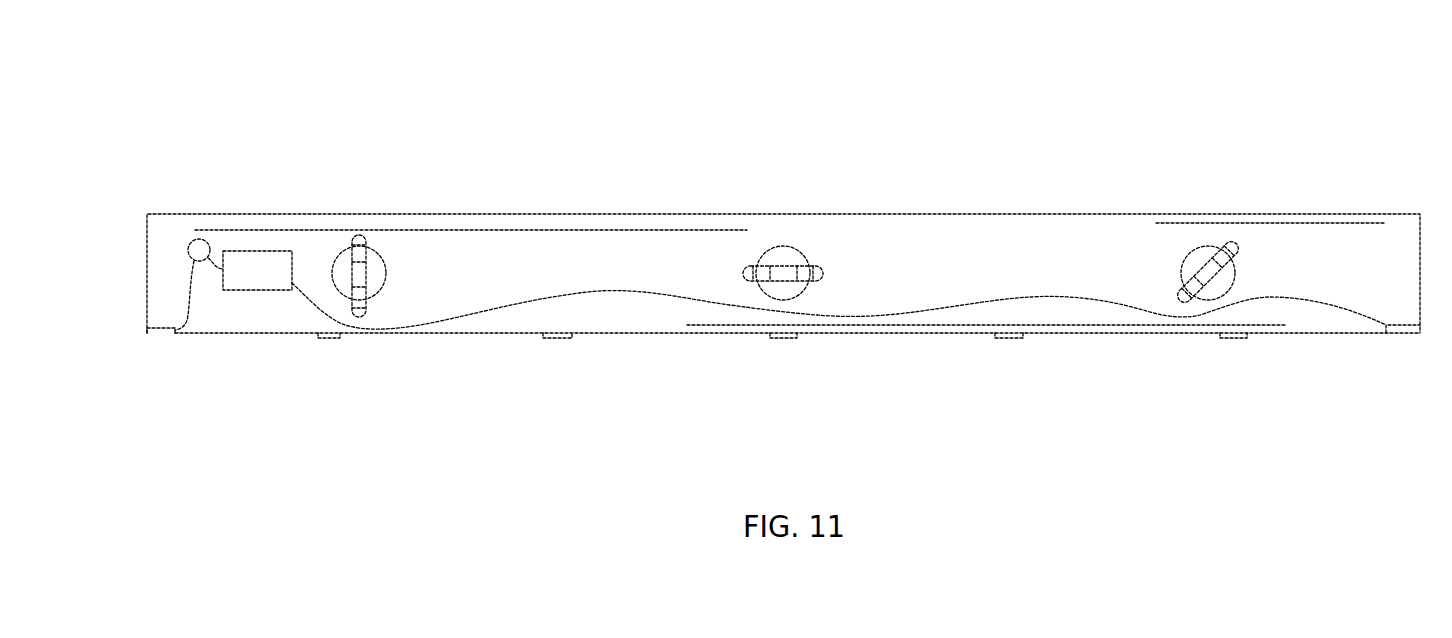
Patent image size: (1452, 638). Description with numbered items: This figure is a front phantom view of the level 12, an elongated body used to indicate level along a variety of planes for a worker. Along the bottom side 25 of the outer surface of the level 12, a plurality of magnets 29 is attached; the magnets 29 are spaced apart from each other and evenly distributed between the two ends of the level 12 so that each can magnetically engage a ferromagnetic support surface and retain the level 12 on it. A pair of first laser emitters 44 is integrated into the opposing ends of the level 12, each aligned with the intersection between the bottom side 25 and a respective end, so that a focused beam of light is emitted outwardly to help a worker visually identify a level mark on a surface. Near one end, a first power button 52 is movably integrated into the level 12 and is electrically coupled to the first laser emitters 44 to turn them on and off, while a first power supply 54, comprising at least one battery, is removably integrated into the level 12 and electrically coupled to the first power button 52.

The level 12 is at (720, 180).
The bottom side 25 is at (1125, 338).
The magnets 29 is at (333, 338).
The first laser emitters 44 is at (147, 333).
The first power button 52 is at (190, 240).
The first power supply 54 is at (279, 268).